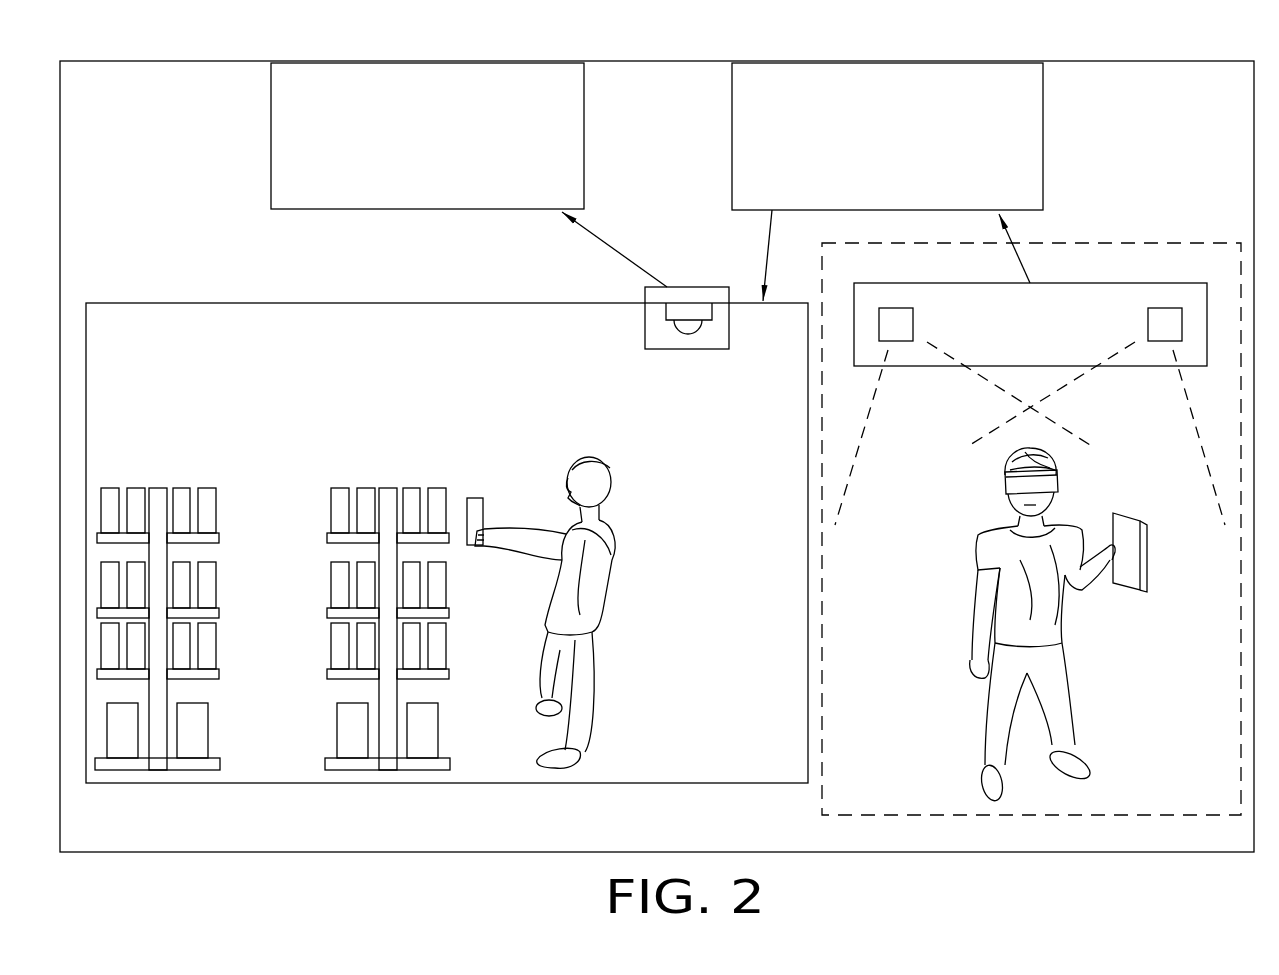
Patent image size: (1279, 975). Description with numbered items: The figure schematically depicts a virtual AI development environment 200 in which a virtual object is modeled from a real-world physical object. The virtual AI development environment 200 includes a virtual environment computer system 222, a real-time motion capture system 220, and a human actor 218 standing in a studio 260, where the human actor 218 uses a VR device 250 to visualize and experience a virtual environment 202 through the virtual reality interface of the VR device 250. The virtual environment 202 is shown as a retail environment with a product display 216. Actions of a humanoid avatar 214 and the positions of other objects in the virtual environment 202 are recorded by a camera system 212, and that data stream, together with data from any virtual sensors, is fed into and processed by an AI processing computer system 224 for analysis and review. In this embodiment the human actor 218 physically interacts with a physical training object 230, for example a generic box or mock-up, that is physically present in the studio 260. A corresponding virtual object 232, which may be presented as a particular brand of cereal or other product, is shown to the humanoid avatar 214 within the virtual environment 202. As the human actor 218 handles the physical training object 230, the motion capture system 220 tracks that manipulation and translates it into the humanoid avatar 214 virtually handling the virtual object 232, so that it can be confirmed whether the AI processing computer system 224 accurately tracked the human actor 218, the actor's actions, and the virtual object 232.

The virtual AI development environment 200 is at (1168, 52).
The virtual environment 202 is at (253, 288).
The camera system 212 is at (645, 316).
The humanoid avatar 214 is at (557, 449).
The product display 216 is at (335, 465).
The human actor 218 is at (966, 498).
The real-time motion capture system 220 is at (960, 283).
The virtual environment computer system 222 is at (732, 125).
The AI processing computer system 224 is at (271, 111).
The physical training object 230 is at (1128, 517).
The virtual object 232 is at (467, 490).
The VR device 250 is at (1057, 482).
The studio 260 is at (1173, 243).